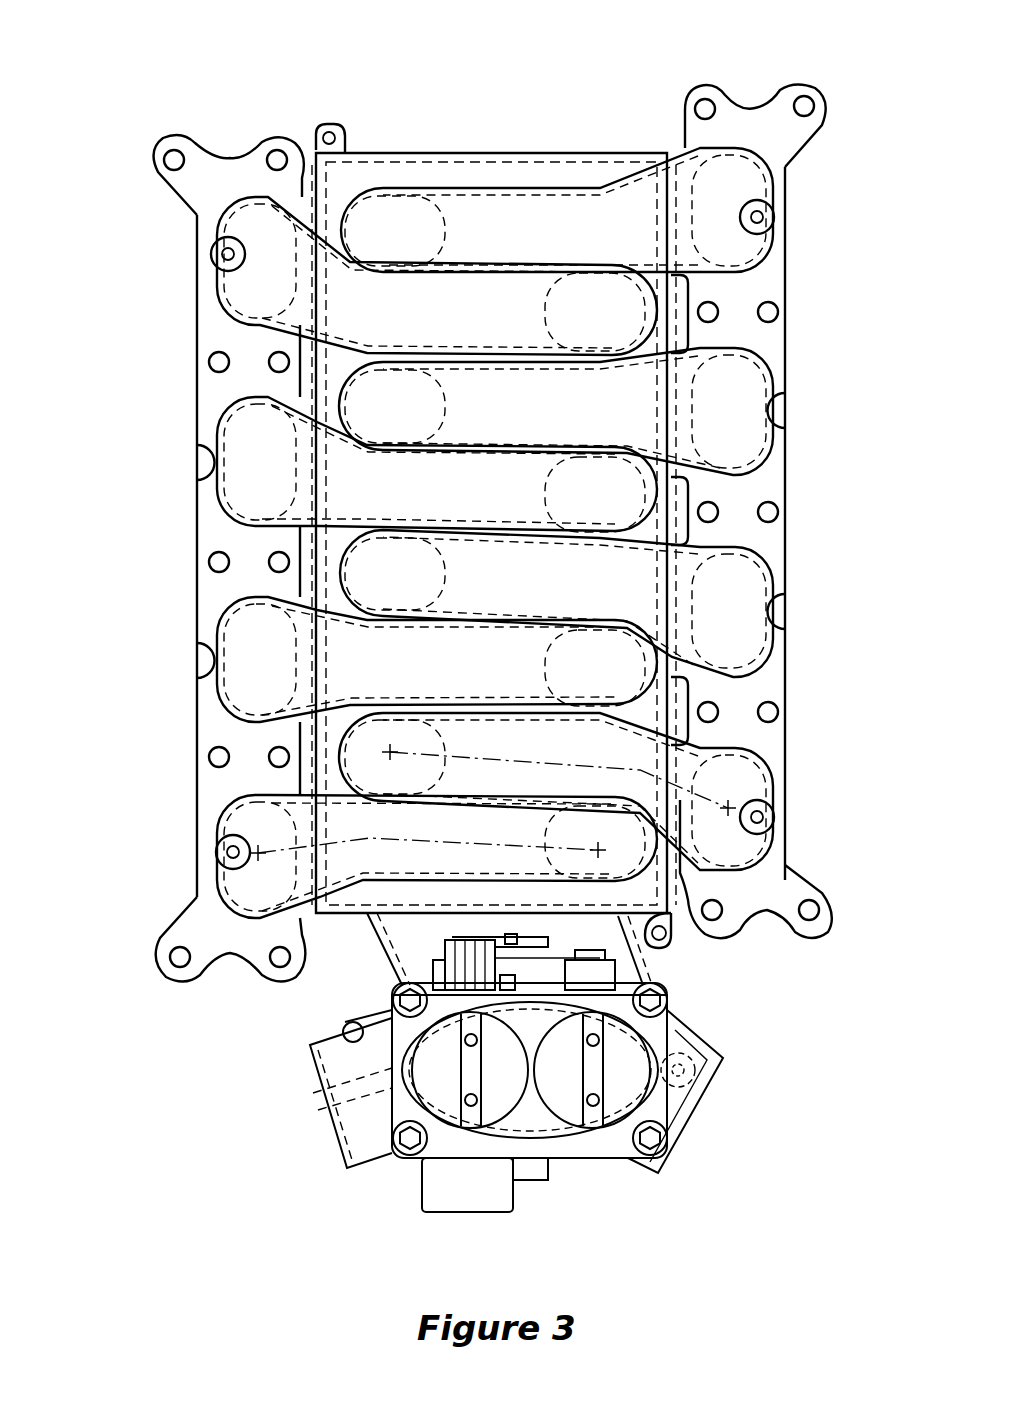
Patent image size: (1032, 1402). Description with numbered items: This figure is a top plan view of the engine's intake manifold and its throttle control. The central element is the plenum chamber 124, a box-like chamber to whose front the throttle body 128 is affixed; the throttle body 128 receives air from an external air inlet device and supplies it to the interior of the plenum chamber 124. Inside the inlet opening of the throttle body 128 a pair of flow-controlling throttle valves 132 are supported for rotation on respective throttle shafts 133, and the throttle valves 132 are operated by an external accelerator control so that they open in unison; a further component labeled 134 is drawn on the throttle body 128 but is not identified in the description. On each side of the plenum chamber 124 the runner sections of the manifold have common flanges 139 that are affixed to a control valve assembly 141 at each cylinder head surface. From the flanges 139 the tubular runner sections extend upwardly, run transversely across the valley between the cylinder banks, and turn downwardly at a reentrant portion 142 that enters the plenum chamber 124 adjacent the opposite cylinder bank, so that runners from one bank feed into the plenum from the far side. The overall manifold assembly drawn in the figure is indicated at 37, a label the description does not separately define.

The intake manifold 37 is at (530, 118).
The plenum chamber 124 is at (568, 143).
The control valve assembly 141 is at (178, 332).
The flanges 139 is at (197, 398).
The reentrant portion 142 is at (486, 174).
The throttle body 128 is at (742, 1048).
The throttle actuator assembly 134 is at (630, 960).
The throttle valves 132 is at (575, 1110).
The throttle shafts 133 is at (590, 1076).